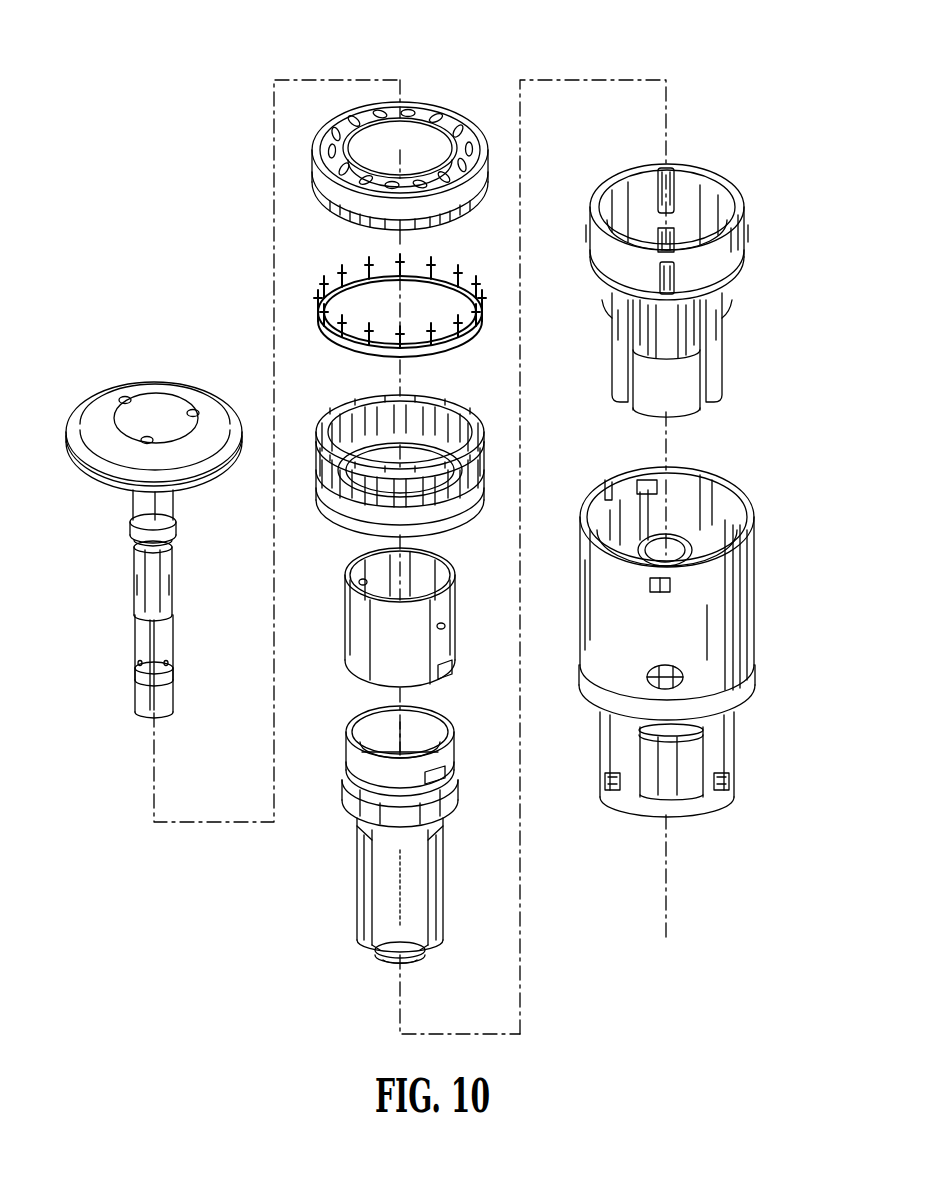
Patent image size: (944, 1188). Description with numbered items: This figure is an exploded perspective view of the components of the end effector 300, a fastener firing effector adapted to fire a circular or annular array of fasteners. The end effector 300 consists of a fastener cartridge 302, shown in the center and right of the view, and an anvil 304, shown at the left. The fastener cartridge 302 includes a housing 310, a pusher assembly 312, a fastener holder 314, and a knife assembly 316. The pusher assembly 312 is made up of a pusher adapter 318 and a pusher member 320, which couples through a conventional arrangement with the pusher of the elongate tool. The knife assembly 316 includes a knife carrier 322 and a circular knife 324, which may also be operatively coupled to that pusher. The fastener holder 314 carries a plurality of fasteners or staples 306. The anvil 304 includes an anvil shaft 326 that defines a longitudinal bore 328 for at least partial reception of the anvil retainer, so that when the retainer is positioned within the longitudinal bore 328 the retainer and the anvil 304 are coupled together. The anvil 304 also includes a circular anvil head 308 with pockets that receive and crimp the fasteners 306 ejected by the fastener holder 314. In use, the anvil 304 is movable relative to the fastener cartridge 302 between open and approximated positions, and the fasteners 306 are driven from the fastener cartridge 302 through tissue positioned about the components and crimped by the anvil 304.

The end effector 300 is at (262, 932).
The fastener cartridge 302 is at (603, 66).
The anvil 304 is at (141, 552).
The fasteners 306 is at (460, 340).
The circular anvil head 308 is at (90, 425).
The housing 310 is at (745, 615).
The pusher assembly 312 is at (705, 290).
The fastener holder 314 is at (445, 108).
The knife assembly 316 is at (335, 660).
The pusher adapter 318 is at (726, 250).
The pusher member 320 is at (340, 408).
The knife carrier 322 is at (413, 887).
The circular knife 324 is at (414, 658).
The anvil shaft 326 is at (142, 592).
The longitudinal bore 328 is at (152, 716).